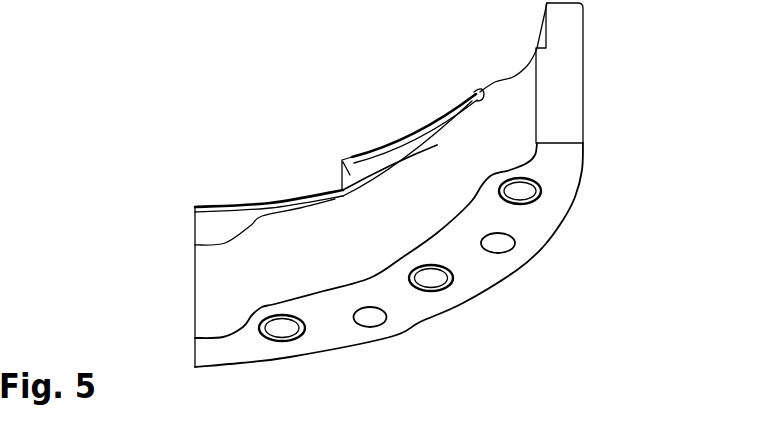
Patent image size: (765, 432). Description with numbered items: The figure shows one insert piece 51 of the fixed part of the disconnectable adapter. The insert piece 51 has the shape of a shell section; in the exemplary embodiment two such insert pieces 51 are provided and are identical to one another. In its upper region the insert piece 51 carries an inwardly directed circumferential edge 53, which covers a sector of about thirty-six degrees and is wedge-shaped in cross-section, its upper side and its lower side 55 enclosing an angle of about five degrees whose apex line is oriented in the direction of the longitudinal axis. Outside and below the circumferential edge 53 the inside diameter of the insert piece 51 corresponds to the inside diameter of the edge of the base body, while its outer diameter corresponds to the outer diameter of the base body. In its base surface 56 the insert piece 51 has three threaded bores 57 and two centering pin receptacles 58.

The insert piece 51 is at (261, 189).
The circumferential edge 53 is at (364, 157).
The lower side 55 is at (432, 135).
The base surface 56 is at (467, 278).
The threaded bore 57 is at (423, 292).
The centering pin receptacle 58 is at (507, 248).